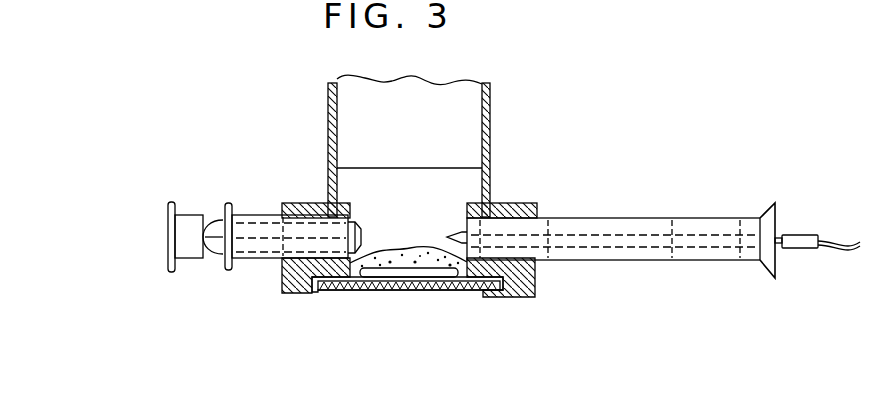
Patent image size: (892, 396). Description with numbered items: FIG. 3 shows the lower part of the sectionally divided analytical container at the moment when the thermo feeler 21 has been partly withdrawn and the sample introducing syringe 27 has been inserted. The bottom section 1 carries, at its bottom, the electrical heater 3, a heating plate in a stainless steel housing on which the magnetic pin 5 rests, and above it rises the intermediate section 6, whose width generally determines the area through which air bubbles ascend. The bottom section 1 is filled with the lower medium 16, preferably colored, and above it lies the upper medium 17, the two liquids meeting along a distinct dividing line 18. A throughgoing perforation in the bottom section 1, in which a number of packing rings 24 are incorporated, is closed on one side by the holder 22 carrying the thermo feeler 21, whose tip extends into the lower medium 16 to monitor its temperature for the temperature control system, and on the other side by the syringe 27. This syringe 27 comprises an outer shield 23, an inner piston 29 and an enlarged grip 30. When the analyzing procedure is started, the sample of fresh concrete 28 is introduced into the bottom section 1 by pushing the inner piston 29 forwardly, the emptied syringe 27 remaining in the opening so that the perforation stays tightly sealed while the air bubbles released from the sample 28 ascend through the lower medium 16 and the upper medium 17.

The bottom section 1 is at (302, 208).
The electrical heater 3 is at (393, 287).
The magnetic pin 5 is at (417, 278).
The intermediate section 6 is at (487, 112).
The lower medium 16 is at (467, 188).
The upper medium 17 is at (355, 132).
The dividing line 18 is at (353, 167).
The thermo feeler 21 is at (583, 240).
The holder 22 is at (682, 228).
The outer shield 23 is at (255, 258).
The packing rings 24 is at (297, 278).
The sample introducing syringe 27 is at (162, 237).
The sample of fresh concrete 28 is at (437, 276).
The inner piston 29 is at (212, 255).
The enlarged grip 30 is at (172, 273).